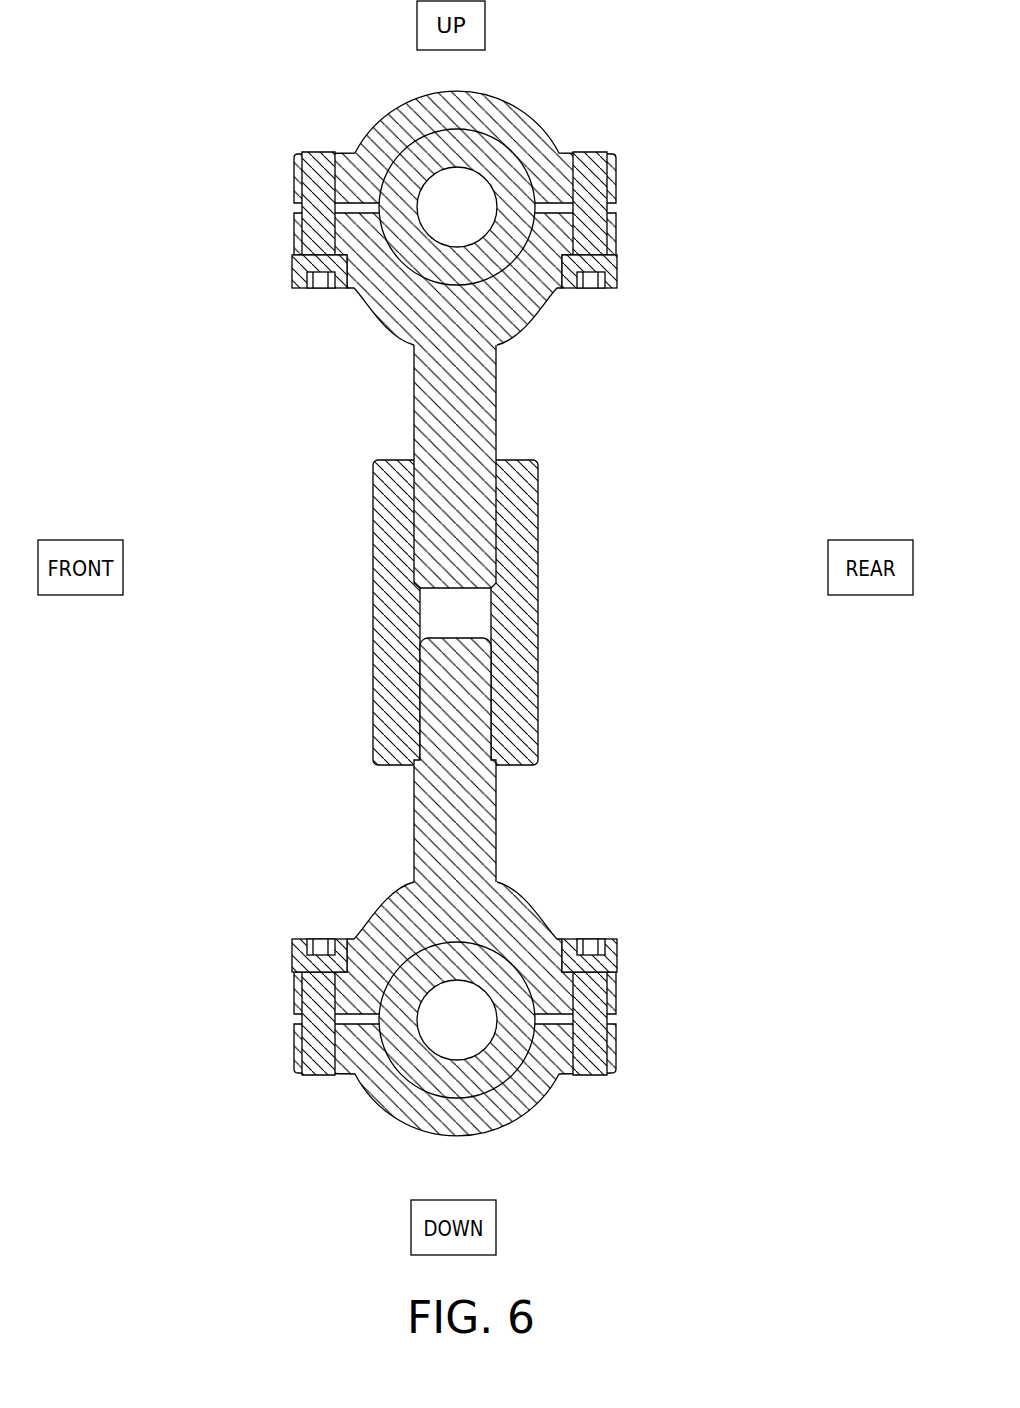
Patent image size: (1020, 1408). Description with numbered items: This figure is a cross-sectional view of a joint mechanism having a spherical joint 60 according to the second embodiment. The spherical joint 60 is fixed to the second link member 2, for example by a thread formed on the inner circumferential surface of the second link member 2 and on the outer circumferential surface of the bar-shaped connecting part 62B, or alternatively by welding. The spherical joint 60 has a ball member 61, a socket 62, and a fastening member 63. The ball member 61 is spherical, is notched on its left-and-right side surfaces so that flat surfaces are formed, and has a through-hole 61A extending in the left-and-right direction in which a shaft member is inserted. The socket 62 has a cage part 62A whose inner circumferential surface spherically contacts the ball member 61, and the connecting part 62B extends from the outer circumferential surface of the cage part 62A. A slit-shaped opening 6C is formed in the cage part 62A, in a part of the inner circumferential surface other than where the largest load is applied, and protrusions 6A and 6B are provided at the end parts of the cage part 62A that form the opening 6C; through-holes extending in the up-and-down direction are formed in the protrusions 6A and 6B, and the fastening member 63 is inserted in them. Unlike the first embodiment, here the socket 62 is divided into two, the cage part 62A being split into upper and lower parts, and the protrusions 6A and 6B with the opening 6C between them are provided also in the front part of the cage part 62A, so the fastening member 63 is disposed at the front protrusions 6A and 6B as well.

The second link member 2 is at (373, 595).
The spherical joint 60 is at (481, 608).
The ball member 61 is at (421, 202).
The through-hole 61A is at (482, 179).
The socket 62 is at (377, 218).
The cage part 62A is at (440, 100).
The connecting part 62B is at (440, 375).
The protrusion 6A is at (301, 173).
The protrusion 6B is at (298, 232).
The opening 6C is at (301, 203).
The fastening member 63 is at (293, 265).